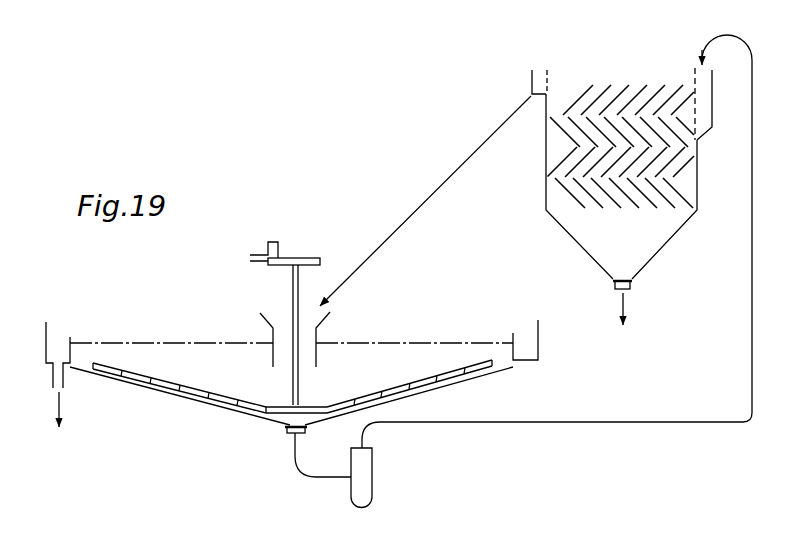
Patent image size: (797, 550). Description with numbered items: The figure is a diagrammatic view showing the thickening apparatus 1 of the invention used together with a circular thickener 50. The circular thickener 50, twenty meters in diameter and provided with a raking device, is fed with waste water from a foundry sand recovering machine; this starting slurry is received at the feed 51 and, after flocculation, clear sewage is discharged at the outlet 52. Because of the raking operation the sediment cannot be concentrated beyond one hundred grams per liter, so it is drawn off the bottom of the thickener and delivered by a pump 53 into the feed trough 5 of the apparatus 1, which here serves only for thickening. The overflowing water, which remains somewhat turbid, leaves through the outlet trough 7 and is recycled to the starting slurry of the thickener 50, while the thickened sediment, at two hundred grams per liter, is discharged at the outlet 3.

The apparatus 1 is at (611, 62).
The sediment discharge 3 is at (622, 323).
The feed trough 5 is at (705, 95).
The outlet trough 7 is at (531, 78).
The circular thickener 50 is at (134, 330).
The starting slurry inlet 51 is at (267, 311).
The clear sewage discharge 52 is at (63, 424).
The pump 53 is at (374, 478).